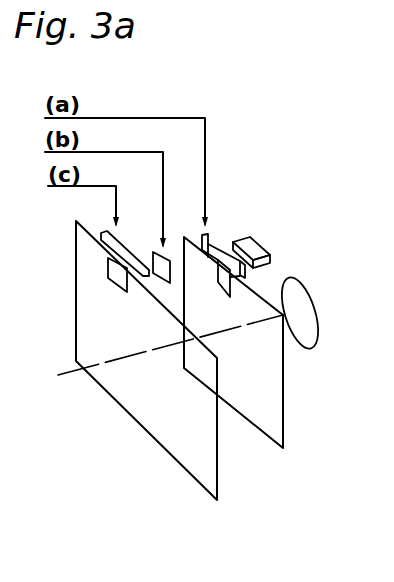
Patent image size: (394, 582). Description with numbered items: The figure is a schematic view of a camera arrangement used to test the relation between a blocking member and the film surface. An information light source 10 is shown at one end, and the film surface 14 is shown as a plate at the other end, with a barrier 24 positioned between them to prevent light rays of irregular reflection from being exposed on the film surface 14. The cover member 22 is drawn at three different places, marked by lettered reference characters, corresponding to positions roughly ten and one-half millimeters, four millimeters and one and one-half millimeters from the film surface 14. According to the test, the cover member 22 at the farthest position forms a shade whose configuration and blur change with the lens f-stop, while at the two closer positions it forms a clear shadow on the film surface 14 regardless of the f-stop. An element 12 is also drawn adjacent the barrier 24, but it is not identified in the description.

The information light source 10 is at (256, 247).
The elliptical element 12 is at (305, 337).
The film surface 14 is at (180, 452).
The cover member 22 is at (123, 245).
The barrier 24 is at (263, 423).